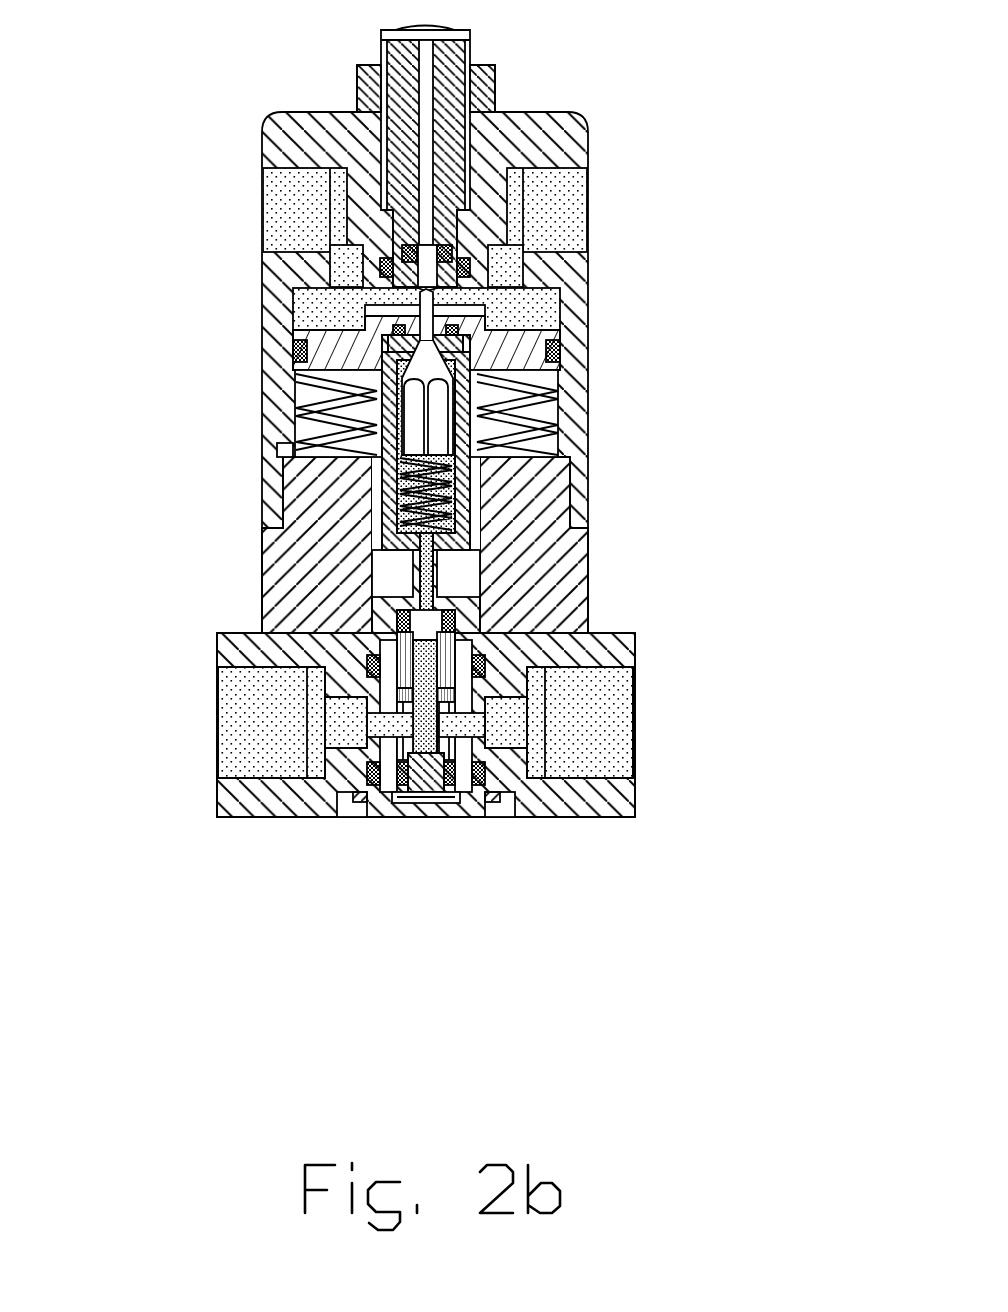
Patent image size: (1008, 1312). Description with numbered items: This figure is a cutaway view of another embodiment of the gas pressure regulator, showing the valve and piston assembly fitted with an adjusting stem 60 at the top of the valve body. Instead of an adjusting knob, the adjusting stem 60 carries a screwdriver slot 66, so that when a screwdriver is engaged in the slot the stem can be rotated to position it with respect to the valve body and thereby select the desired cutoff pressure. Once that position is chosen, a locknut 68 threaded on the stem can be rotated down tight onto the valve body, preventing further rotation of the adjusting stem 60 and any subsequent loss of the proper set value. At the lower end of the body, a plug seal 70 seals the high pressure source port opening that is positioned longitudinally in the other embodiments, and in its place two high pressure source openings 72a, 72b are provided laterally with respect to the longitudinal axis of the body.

The adjusting stem 60 is at (461, 168).
The screwdriver slot 66 is at (398, 32).
The locknut 68 is at (495, 110).
The plug seal 70 is at (423, 780).
The high pressure source opening 72a is at (297, 730).
The high pressure source opening 72b is at (567, 728).